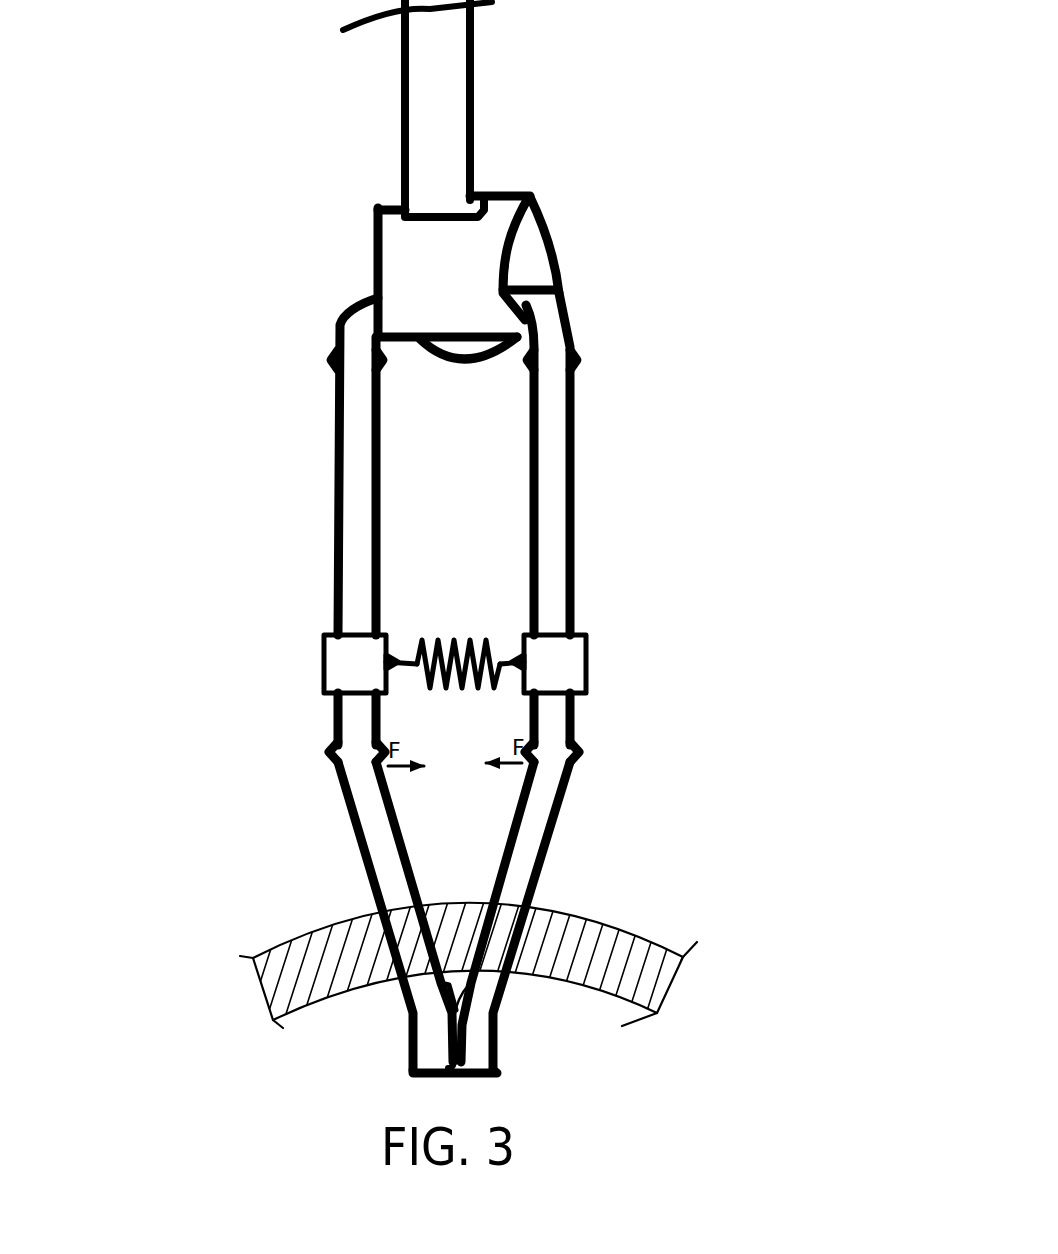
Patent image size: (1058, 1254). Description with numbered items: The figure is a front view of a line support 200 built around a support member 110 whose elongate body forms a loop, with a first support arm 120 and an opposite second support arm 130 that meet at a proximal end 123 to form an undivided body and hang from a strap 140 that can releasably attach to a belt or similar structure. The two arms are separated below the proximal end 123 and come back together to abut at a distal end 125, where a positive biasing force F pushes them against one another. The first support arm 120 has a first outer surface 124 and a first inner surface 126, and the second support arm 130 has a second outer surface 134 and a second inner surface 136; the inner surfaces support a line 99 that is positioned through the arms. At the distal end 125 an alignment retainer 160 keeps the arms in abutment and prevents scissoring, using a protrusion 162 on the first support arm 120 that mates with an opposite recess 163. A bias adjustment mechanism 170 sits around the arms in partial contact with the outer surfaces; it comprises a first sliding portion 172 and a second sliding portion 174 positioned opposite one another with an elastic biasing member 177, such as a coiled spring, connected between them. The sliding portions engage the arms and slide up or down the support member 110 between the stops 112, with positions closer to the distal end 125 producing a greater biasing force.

The line 99 is at (662, 940).
The support member 110 is at (218, 468).
The stop 112 is at (326, 362).
The first support arm 120 is at (330, 722).
The proximal end 123 is at (338, 282).
The first outer surface 124 is at (348, 852).
The distal end 125 is at (530, 1068).
The first inner surface 126 is at (420, 864).
The second support arm 130 is at (568, 816).
The second outer surface 134 is at (547, 878).
The second inner surface 136 is at (519, 793).
The strap 140 is at (460, 108).
The alignment retainer 160 is at (470, 1096).
The protrusion 162 is at (430, 1040).
The recess 163 is at (463, 1028).
The bias adjustment mechanism 170 is at (645, 611).
The first sliding portion 172 is at (588, 661).
The second sliding portion 174 is at (323, 660).
The elastic biasing member 177 is at (465, 636).
The line support 200 is at (810, 418).